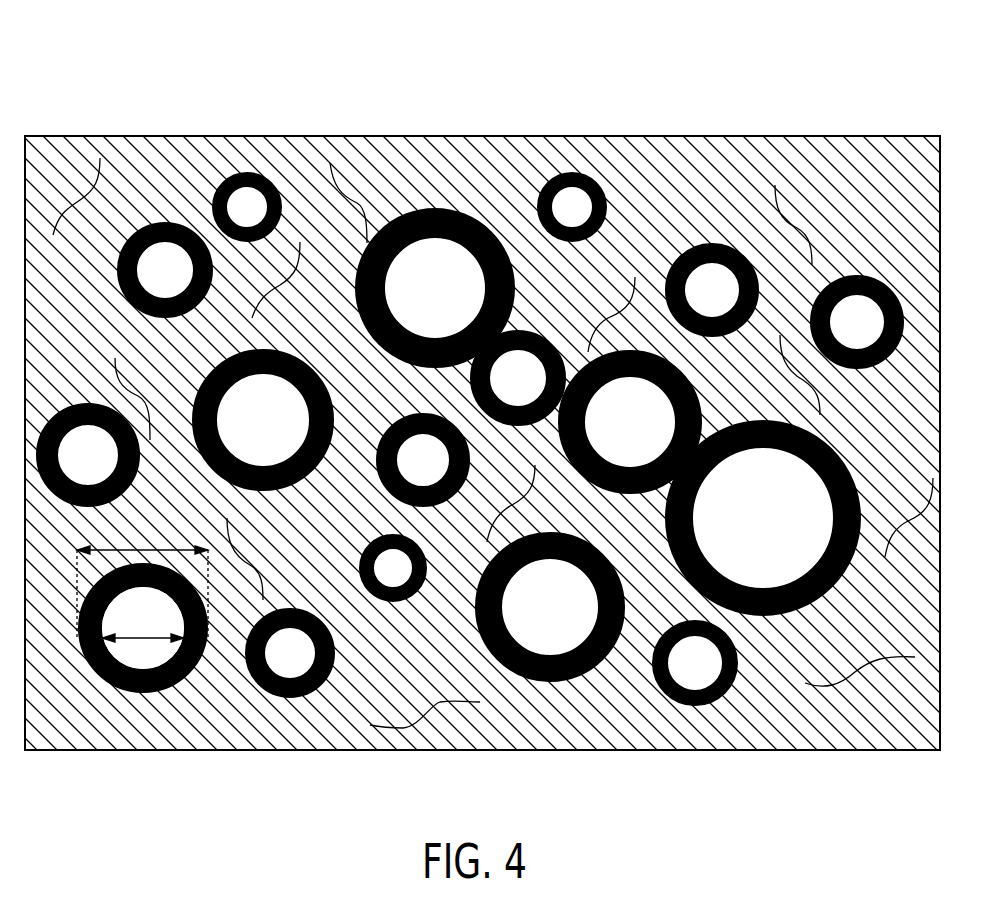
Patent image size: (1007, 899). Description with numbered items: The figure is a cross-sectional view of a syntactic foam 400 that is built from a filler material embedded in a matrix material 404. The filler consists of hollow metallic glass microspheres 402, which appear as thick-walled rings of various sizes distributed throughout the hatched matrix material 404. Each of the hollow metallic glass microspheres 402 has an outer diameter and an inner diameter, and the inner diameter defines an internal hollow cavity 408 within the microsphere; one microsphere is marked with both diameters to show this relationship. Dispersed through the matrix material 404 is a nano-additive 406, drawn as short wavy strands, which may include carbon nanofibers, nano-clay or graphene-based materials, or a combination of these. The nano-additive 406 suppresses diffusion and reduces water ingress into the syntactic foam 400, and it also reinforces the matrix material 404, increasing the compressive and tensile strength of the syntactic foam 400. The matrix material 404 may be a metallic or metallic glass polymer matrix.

The syntactic foam 400 is at (482, 425).
The hollow metallic glass microspheres 402 is at (190, 675).
The matrix material 404 is at (70, 725).
The nano-additive 406 is at (403, 728).
The internal hollow cavity 408 is at (143, 662).